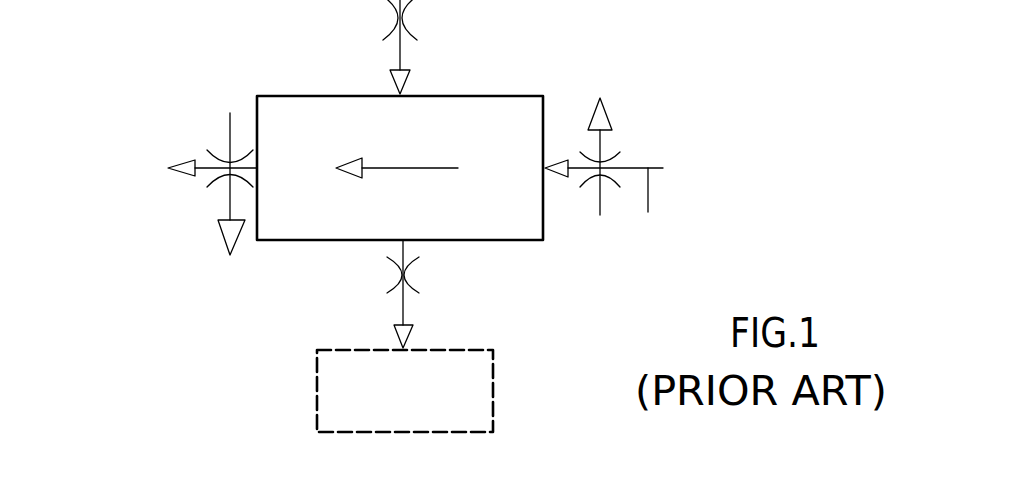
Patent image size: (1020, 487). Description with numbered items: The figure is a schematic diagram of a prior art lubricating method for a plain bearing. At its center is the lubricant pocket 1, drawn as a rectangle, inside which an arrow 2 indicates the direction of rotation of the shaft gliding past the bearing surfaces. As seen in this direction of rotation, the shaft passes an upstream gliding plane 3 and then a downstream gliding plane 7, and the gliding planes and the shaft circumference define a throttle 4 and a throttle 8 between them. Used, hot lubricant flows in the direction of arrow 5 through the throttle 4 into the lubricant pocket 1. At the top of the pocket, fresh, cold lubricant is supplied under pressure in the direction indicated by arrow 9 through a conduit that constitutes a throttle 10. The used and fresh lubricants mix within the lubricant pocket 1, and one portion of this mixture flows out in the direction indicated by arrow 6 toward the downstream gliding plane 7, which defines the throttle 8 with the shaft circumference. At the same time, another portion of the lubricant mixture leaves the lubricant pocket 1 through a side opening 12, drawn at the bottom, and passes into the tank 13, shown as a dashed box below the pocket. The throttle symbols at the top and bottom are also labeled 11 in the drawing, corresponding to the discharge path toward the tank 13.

The lubricant pocket 1 is at (533, 93).
The arrow indicating direction of rotation 2 is at (397, 146).
The upstream gliding plane 3 is at (597, 162).
The throttle 4 is at (605, 162).
The arrow indicating flow of used lubricant 5 is at (650, 210).
The arrow indicating flow of lubricant mixture 6 is at (204, 174).
The downstream gliding plane 7 is at (228, 162).
The throttle 8 is at (230, 160).
The arrow indicating supply of fresh lubricant 9 is at (398, 57).
The throttle 10 is at (400, 18).
The bottom discharge valve 11 is at (403, 275).
The side opening 12 is at (403, 275).
The tank 13 is at (493, 402).